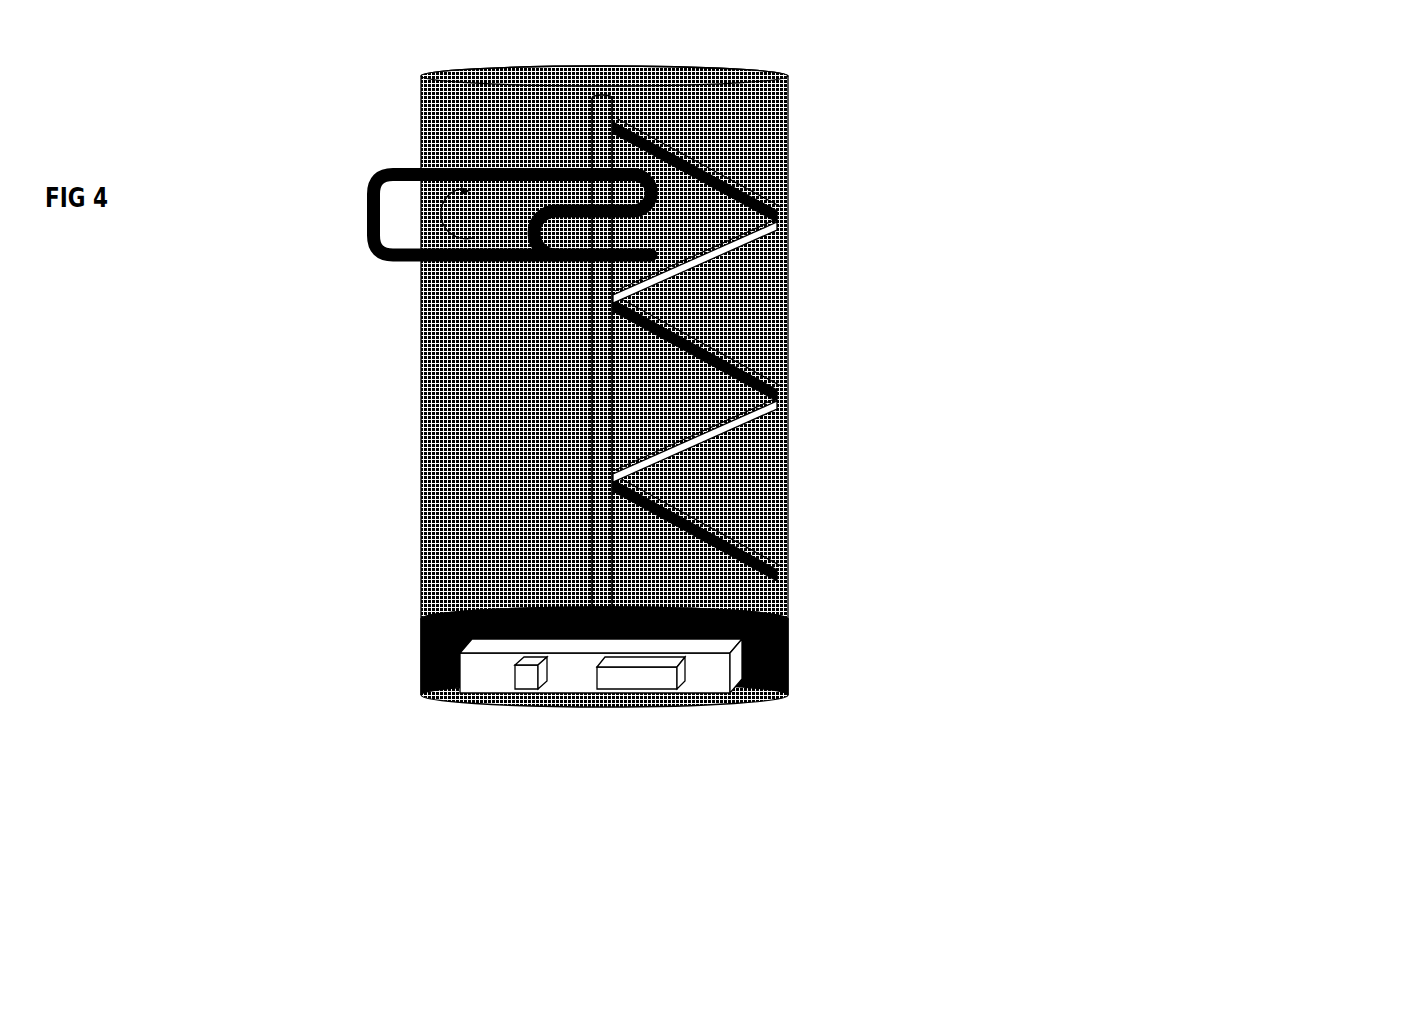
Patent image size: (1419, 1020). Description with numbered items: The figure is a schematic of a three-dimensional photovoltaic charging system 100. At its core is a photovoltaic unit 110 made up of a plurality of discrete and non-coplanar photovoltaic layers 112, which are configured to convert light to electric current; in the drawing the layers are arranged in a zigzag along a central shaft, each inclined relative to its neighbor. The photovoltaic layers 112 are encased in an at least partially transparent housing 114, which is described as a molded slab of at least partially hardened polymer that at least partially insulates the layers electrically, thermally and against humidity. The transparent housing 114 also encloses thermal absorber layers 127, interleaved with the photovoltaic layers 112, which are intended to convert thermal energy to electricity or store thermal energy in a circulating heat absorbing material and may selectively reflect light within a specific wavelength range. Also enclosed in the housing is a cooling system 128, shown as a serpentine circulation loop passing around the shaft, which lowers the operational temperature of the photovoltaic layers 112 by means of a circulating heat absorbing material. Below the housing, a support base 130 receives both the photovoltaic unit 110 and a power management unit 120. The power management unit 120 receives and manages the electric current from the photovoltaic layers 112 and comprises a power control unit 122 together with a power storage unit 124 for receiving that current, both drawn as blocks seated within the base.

The three-dimensional photovoltaic charging system 100 is at (176, 153).
The photovoltaic unit 110 is at (997, 355).
The photovoltaic layers 112 is at (852, 349).
The transparent housing 114 is at (770, 386).
The power management unit 120 is at (915, 752).
The power control unit 122 is at (790, 728).
The power storage unit 124 is at (750, 761).
The thermal absorber layer 127 is at (1182, 450).
The cooling system 128 is at (341, 277).
The support base 130 is at (425, 645).